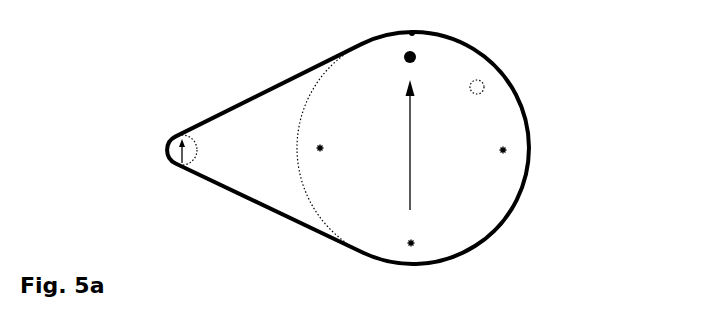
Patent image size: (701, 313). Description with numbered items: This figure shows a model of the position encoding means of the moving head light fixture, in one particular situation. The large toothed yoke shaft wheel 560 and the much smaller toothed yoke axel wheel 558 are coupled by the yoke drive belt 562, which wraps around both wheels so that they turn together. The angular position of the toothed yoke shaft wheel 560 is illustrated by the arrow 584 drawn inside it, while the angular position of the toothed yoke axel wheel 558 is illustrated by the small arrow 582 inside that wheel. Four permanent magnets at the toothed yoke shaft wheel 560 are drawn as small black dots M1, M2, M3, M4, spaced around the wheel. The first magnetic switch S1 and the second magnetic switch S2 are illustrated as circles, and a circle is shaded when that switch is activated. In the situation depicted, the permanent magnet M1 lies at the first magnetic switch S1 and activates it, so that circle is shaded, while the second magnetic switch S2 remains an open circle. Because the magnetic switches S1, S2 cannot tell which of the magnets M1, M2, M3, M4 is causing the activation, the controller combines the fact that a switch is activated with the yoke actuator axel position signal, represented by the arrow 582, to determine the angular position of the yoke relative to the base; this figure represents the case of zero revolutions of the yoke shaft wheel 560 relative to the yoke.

The toothed yoke axel wheel 558 is at (189, 158).
The toothed yoke shaft wheel 560 is at (356, 207).
The yoke drive belt 562 is at (267, 88).
The arrow indicating angular position of toothed yoke axel wheel 582 is at (174, 138).
The arrow indicating angular position of toothed yoke shaft wheel 584 is at (431, 145).
The permanent magnet M1 is at (395, 60).
The permanent magnet M2 is at (506, 164).
The permanent magnet M3 is at (426, 247).
The permanent magnet M4 is at (322, 163).
The first magnetic switch S1 is at (406, 79).
The second magnetic switch S2 is at (488, 97).